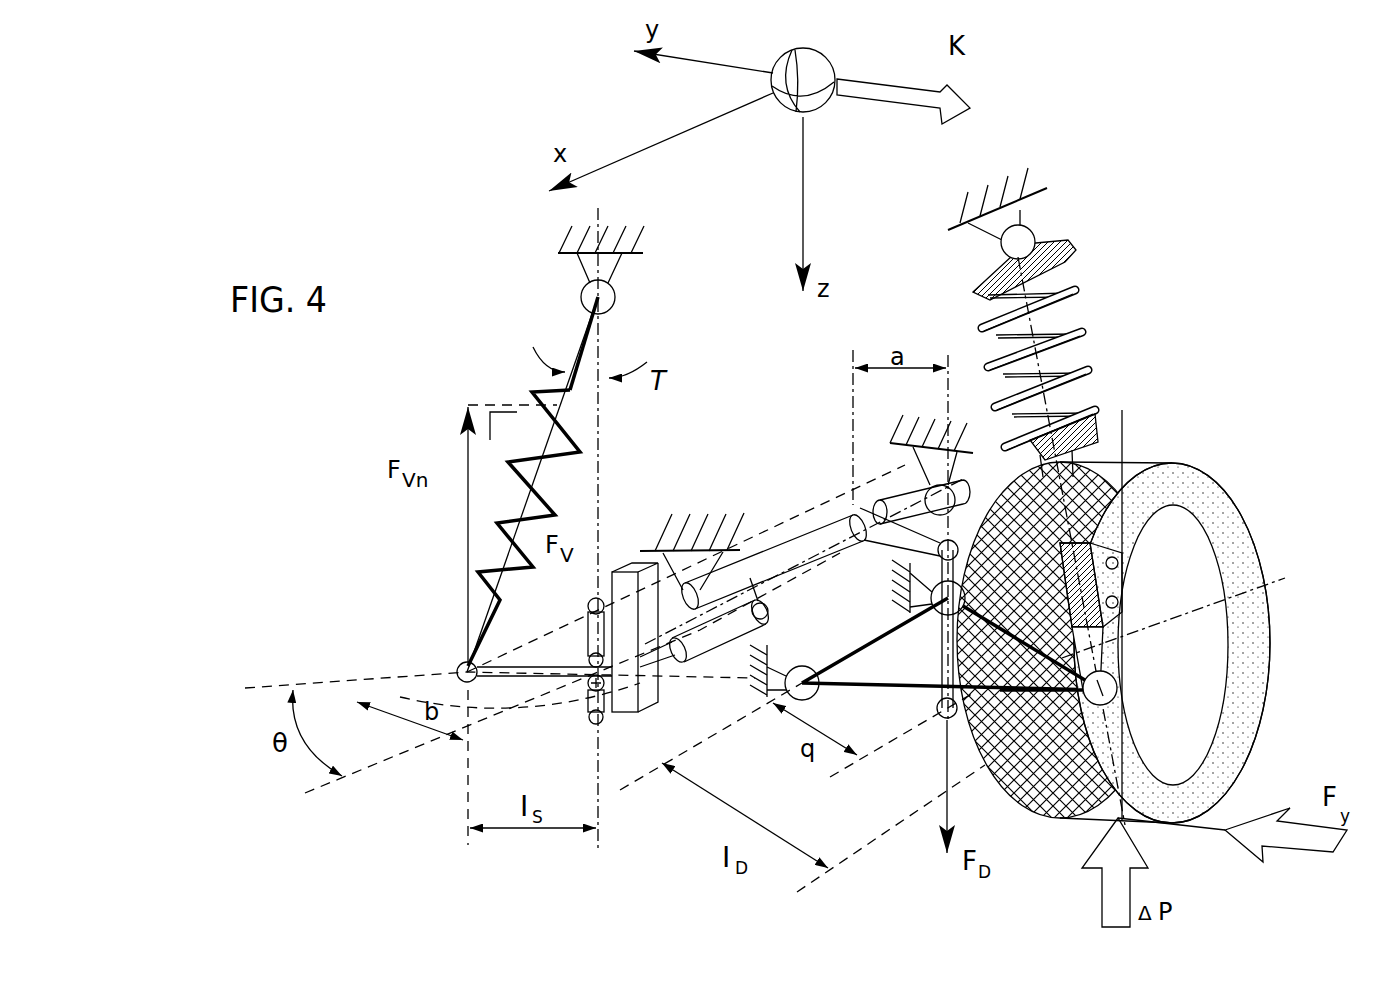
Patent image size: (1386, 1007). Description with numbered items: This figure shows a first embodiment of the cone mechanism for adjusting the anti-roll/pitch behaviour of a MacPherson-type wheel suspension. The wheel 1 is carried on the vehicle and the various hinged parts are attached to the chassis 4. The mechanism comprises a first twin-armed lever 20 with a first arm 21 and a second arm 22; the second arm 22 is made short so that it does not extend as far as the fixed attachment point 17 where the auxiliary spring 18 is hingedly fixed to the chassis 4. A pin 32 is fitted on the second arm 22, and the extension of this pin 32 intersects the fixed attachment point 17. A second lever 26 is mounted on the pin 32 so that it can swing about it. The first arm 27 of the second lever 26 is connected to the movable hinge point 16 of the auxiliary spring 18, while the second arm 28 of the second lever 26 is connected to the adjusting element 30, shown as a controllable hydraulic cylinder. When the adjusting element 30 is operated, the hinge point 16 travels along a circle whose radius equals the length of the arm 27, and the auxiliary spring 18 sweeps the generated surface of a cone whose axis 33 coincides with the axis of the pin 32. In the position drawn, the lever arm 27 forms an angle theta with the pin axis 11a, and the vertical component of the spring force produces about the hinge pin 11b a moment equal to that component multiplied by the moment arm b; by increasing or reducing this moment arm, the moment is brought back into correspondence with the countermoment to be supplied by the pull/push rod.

The wheel 1 is at (1246, 558).
The chassis 4 is at (592, 242).
The pin axis 11a is at (329, 784).
The hinge pin 11b is at (800, 537).
The movable hinge point of the auxiliary spring 16 is at (458, 667).
The fixed attachment point of the auxiliary spring 17 is at (615, 298).
The auxiliary spring 18 is at (497, 527).
The first twin-armed lever 20 is at (776, 550).
The first arm 21 is at (857, 508).
The second arm 22 is at (624, 560).
The second lever 26 is at (585, 692).
The first arm of the second lever 27 is at (538, 658).
The second arm of the second lever 28 is at (618, 712).
The adjusting element 30 is at (768, 632).
The pin 32 is at (588, 635).
The axis of the cone 33 is at (598, 848).